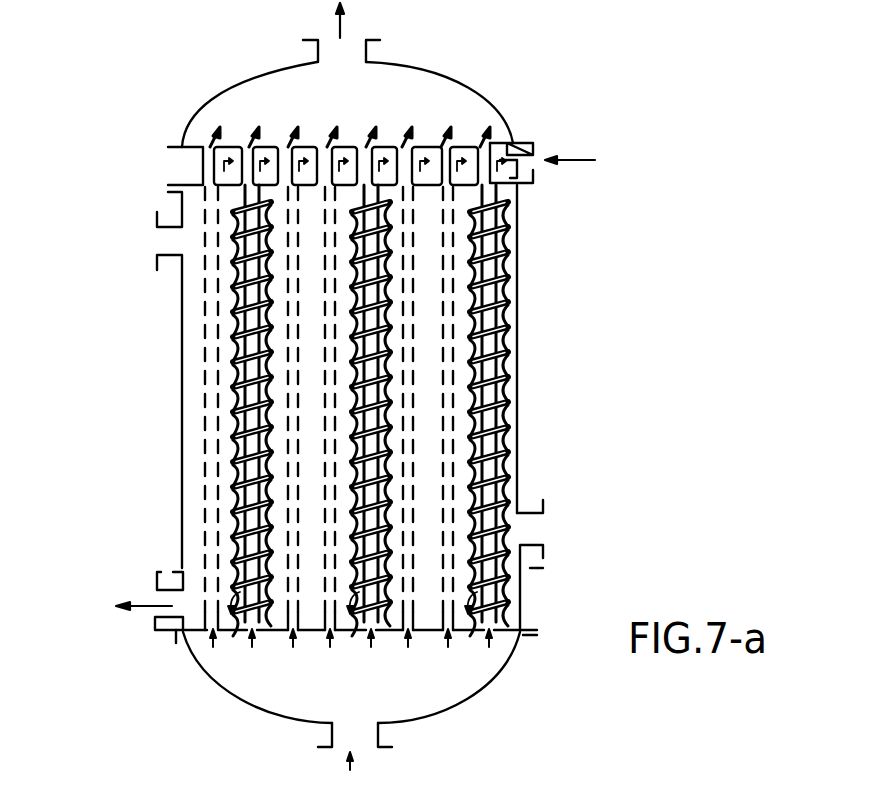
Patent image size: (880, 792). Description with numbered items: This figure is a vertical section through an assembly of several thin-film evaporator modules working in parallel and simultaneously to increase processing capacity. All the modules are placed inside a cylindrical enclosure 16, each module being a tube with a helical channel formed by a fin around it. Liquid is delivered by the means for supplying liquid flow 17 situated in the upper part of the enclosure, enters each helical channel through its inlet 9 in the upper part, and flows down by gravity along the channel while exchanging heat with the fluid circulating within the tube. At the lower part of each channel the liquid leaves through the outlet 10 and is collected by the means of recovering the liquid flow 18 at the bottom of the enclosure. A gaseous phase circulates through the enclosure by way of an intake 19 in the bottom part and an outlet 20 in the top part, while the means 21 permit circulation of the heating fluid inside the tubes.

The means permitting circulation of the fluid inside the tube 21 is at (342, 31).
The means for supplying liquid flow 17 is at (527, 150).
The inlet 9 is at (517, 186).
The enclosure 16 is at (522, 397).
The gaseous phase intake 19 is at (533, 532).
The outlet 10 is at (473, 628).
The means of recovering the liquid flow 18 is at (183, 622).
The gaseous phase outlet 20 is at (152, 243).